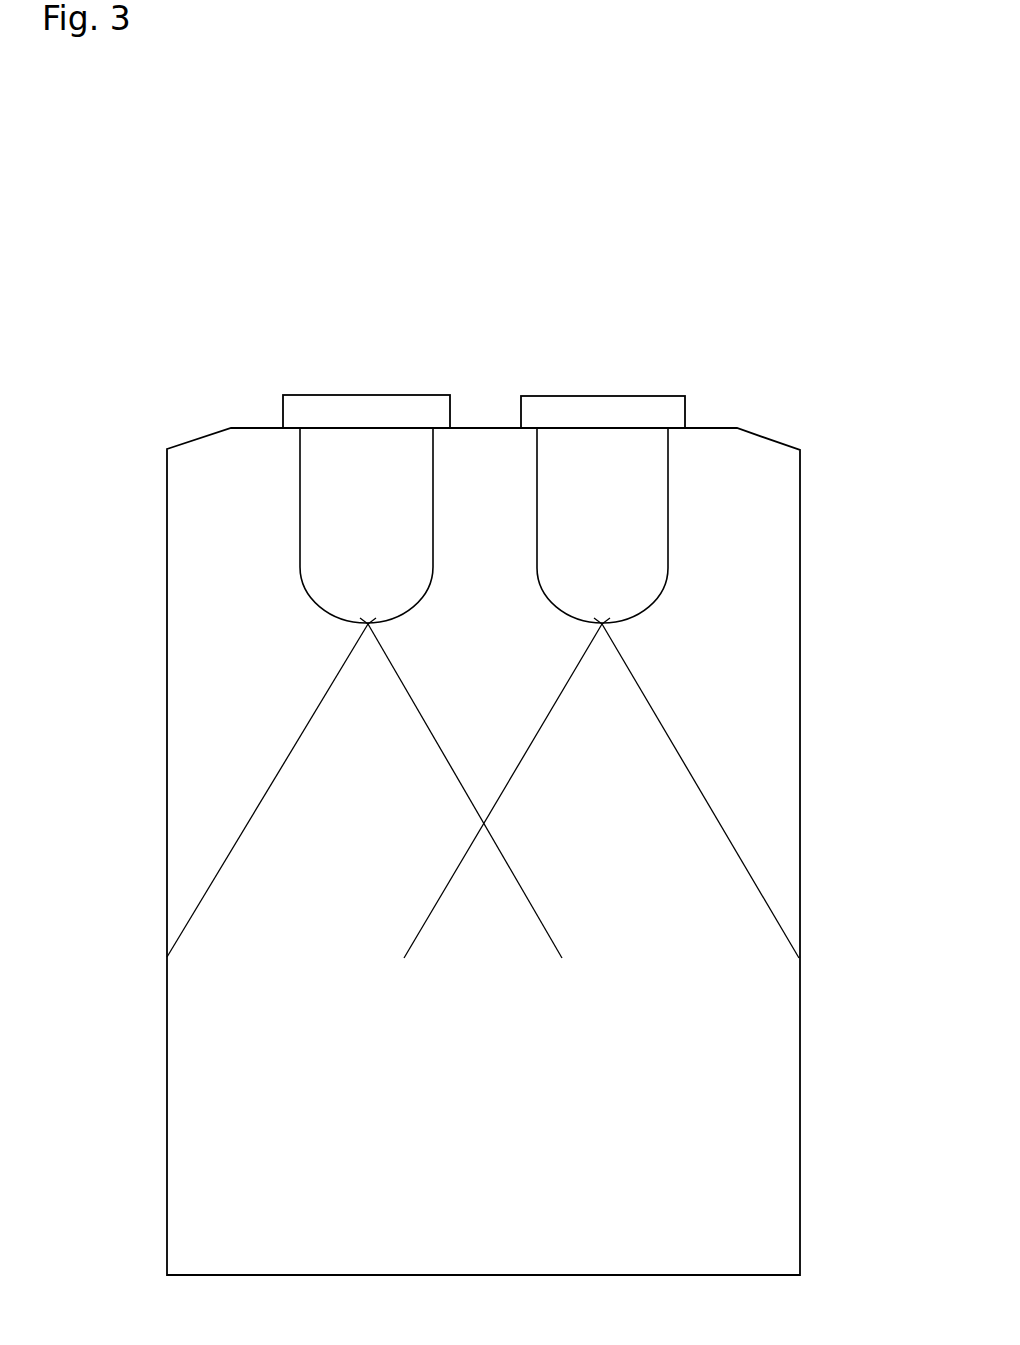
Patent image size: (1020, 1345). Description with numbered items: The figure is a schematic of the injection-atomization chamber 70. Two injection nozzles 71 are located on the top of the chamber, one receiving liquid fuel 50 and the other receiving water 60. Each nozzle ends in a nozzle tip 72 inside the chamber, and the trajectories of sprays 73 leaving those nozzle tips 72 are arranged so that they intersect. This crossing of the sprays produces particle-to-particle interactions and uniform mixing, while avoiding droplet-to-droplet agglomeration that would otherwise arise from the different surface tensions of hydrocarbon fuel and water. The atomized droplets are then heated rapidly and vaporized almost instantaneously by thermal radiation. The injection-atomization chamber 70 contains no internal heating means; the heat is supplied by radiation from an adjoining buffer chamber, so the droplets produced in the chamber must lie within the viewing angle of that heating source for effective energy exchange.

The liquid fuel 50 is at (368, 394).
The water 60 is at (603, 394).
The injection-atomization chamber 70 is at (270, 660).
The injection nozzles 71 is at (363, 486).
The nozzle tips 72 is at (614, 624).
The trajectories of sprays 73 is at (603, 770).